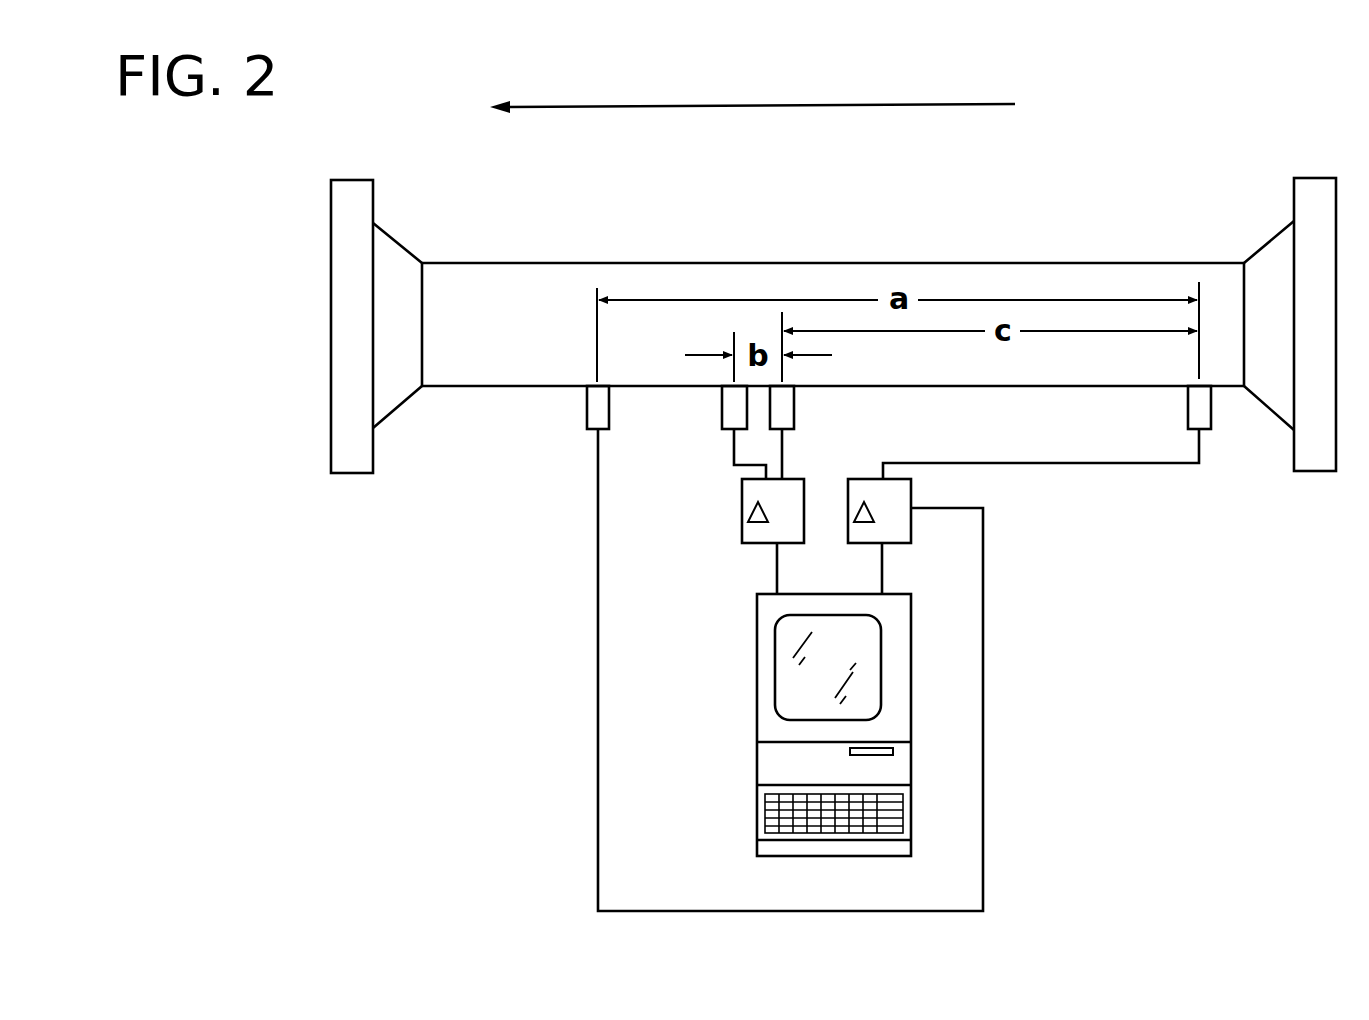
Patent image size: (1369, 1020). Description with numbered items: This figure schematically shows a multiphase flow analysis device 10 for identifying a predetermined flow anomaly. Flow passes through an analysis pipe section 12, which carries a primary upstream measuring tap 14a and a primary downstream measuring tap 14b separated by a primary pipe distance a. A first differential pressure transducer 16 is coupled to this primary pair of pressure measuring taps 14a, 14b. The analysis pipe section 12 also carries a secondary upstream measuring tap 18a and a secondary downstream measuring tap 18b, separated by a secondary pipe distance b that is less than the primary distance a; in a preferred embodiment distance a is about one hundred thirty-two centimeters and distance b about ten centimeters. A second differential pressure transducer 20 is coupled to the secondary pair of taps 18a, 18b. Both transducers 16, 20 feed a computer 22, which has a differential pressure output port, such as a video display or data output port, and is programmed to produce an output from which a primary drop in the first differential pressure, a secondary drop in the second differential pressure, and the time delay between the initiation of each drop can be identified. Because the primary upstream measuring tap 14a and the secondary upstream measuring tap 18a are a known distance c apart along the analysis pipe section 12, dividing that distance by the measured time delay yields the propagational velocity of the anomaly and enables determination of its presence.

The multiphase flow analysis device 10 is at (1163, 196).
The analysis pipe section 12 is at (545, 262).
The primary upstream measuring tap 14a is at (1212, 415).
The primary downstream measuring tap 14b is at (585, 405).
The first differential pressure transducer 16 is at (895, 545).
The secondary upstream measuring tap 18a is at (796, 410).
The secondary downstream measuring tap 18b is at (722, 412).
The second differential pressure transducer 20 is at (742, 530).
The computer 22 is at (757, 670).